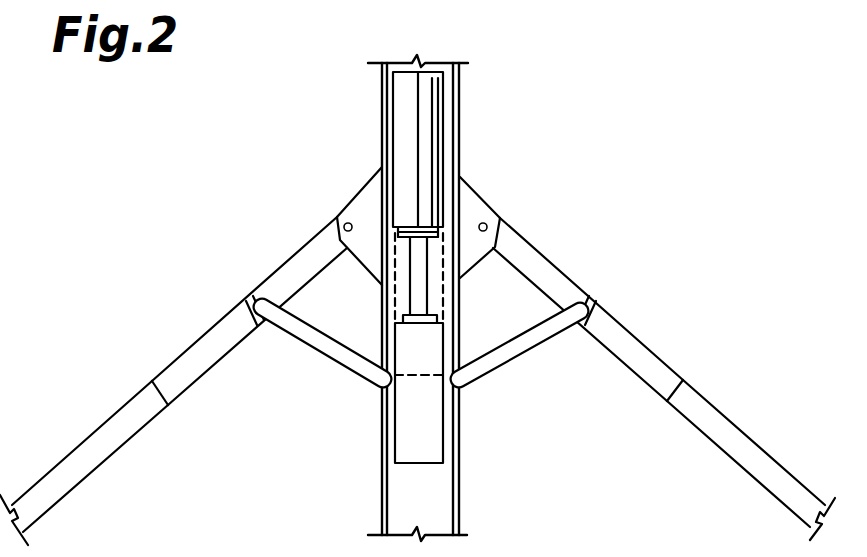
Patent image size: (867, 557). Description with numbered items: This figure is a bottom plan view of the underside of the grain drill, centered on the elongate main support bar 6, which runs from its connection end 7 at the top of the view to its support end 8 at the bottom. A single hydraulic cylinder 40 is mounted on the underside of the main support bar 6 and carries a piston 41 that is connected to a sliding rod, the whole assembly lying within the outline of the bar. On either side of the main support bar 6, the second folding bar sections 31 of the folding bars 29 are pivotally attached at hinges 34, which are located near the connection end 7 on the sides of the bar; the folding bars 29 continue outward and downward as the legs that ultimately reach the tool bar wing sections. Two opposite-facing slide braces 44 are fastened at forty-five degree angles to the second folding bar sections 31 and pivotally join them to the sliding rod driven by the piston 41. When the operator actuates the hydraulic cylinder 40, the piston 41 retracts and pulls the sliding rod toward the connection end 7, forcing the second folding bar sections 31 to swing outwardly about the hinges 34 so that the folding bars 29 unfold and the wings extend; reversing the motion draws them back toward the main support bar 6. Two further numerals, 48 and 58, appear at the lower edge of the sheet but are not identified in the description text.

The main support bar 6 is at (460, 470).
The connection end 7 is at (433, 63).
The support end 8 is at (445, 537).
The folding bars 29 is at (93, 432).
The second folding bar sections 31 is at (190, 342).
The hinges 34 is at (348, 222).
The hydraulic cylinder 40 is at (427, 128).
The piston 41 is at (422, 288).
The slide braces 44 is at (328, 357).
The ground wheel 48 is at (611, 549).
The frame member 58 is at (703, 549).